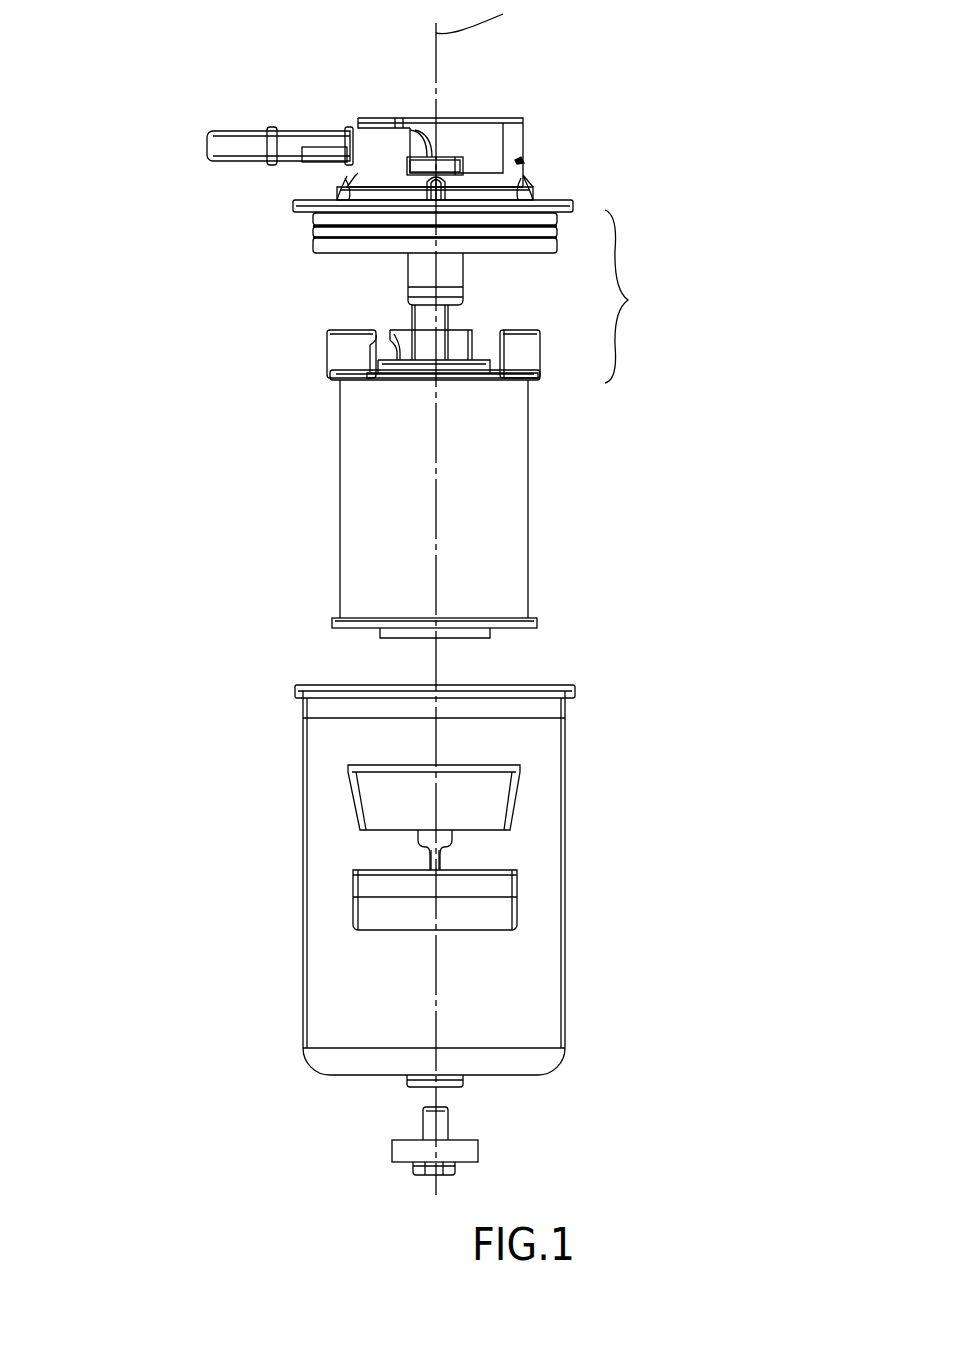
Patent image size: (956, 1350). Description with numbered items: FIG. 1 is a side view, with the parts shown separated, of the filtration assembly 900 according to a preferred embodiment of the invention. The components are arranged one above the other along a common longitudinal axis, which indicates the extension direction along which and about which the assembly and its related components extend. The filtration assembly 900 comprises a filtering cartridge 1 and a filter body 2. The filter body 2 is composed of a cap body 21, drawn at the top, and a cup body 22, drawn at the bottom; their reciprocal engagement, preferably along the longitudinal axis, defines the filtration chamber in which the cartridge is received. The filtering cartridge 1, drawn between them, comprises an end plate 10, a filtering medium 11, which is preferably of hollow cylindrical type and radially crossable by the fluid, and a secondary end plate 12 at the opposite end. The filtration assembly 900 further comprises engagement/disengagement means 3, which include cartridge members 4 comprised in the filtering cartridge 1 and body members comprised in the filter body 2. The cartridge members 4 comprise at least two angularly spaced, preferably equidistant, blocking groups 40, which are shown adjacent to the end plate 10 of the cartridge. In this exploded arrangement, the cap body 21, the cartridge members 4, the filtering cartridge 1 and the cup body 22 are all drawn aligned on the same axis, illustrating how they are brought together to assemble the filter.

The filtration assembly 900 is at (439, 598).
The cap body 21 is at (232, 208).
The engagement/disengagement means 3 is at (409, 327).
The blocking groups 40 is at (400, 327).
The cartridge members 4 is at (351, 347).
The filtering cartridge 1 is at (410, 518).
The end plate 10 is at (535, 380).
The filtering medium 11 is at (505, 483).
The secondary end plate 12 is at (537, 623).
The filter body 2 is at (351, 930).
The cup body 22 is at (295, 815).